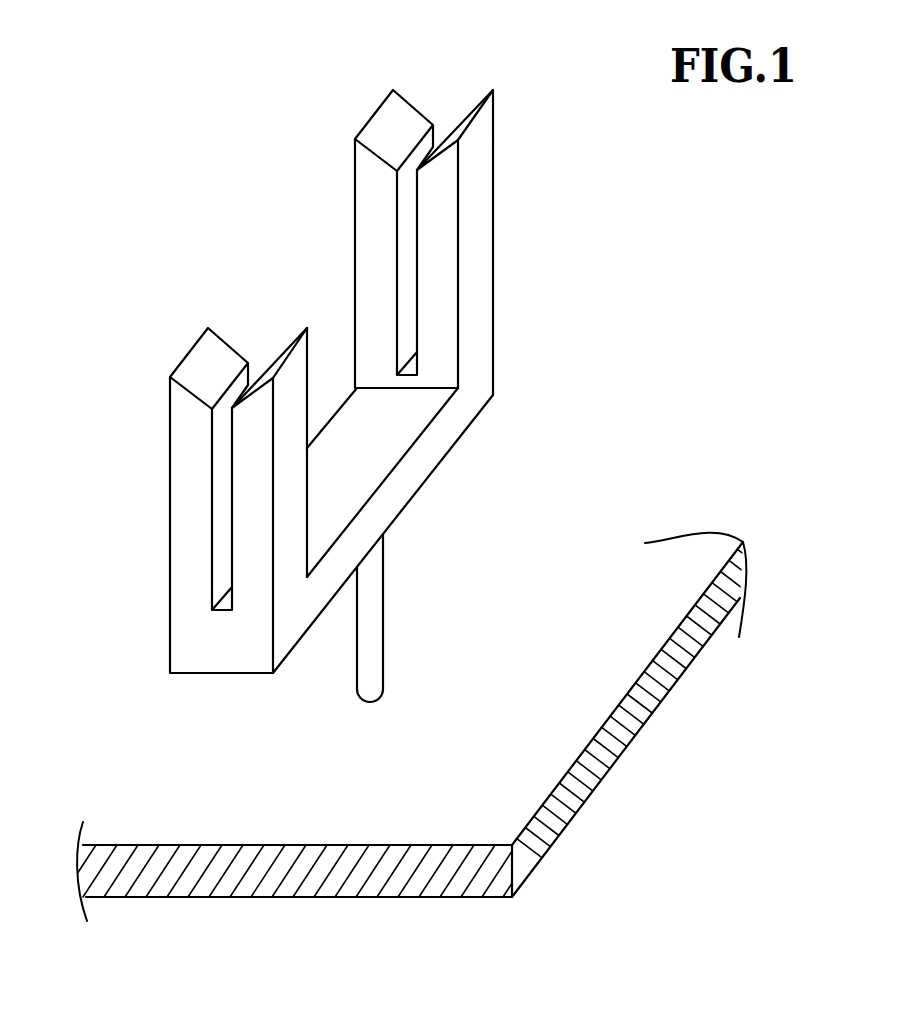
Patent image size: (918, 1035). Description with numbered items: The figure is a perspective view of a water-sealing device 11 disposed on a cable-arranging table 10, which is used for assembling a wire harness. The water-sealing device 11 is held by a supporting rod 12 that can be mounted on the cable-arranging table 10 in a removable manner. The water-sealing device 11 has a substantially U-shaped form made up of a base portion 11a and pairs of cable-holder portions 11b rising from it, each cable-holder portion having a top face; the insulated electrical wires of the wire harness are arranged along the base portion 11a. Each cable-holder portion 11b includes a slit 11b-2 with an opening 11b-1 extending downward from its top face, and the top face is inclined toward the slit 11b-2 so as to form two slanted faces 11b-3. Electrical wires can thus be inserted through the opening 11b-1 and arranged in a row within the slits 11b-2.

The cable-arranging table 10 is at (322, 825).
The water-sealing device 11 is at (339, 345).
The base portion 11a is at (398, 485).
The cable-holder portions 11b is at (339, 345).
The opening 11b-1 is at (254, 377).
The slit 11b-2 is at (219, 552).
The slanted faces 11b-3 is at (205, 368).
The supporting rod 12 is at (373, 626).